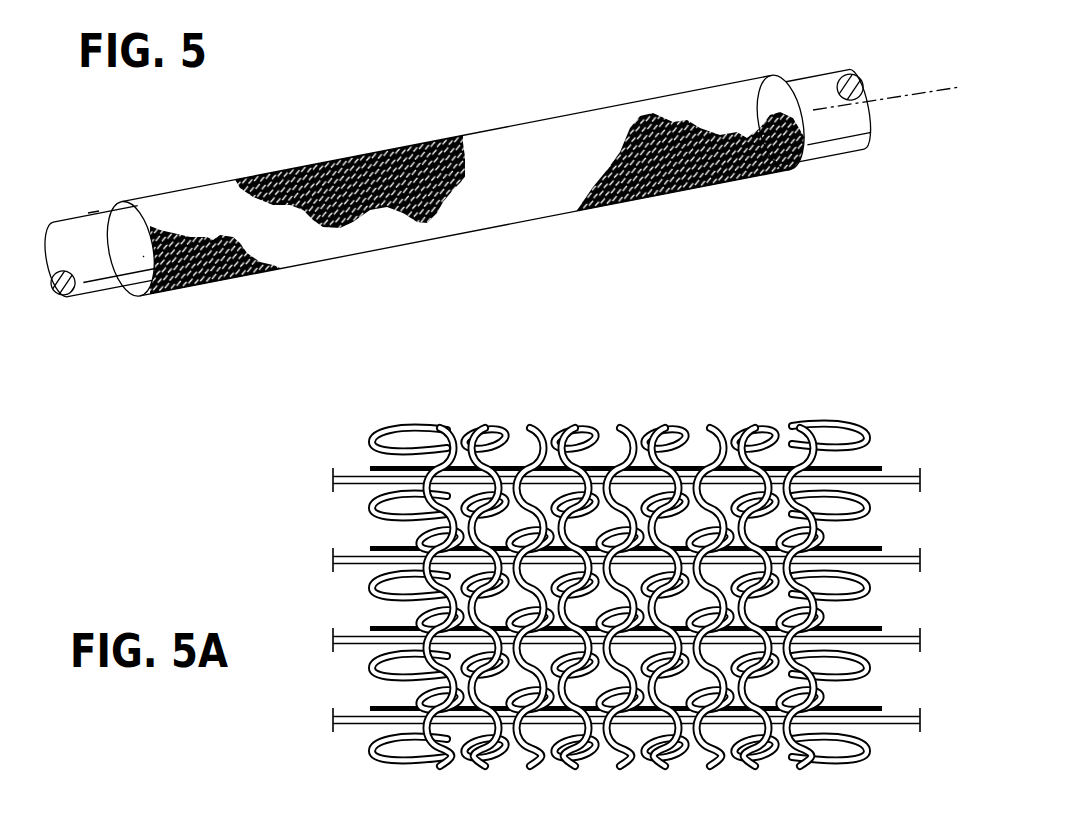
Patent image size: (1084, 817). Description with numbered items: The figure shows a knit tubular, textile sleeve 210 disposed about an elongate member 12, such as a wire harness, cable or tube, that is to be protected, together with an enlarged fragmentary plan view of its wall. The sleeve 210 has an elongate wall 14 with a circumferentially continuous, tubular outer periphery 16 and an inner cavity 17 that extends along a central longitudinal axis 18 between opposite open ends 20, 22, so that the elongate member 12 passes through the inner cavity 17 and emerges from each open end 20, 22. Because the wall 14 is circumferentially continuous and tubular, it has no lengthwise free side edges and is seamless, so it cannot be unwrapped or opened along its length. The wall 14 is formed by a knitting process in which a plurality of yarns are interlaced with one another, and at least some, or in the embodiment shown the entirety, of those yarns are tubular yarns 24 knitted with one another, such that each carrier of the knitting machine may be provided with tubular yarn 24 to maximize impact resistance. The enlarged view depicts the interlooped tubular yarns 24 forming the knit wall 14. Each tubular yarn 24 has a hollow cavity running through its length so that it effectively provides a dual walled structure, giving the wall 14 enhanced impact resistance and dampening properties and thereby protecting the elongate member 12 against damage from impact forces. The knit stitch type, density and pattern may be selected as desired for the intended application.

In FIG. 5, the tubular textile sleeve 210 is at (390, 78).
In FIG. 5A, the tubular textile sleeve 210 is at (798, 395).
In FIG. 5, the elongate member 12 is at (88, 213).
In FIG. 5, the elongate wall 14 is at (510, 165).
In FIG. 5A, the elongate wall 14 is at (348, 428).
In FIG. 5, the tubular outer periphery 16 is at (575, 143).
In FIG. 5, the inner cavity 17 is at (143, 257).
In FIG. 5, the central longitudinal axis 18 is at (923, 90).
In FIG. 5, the open end 20 is at (140, 216).
In FIG. 5, the open end 22 is at (800, 100).
In FIG. 5A, the tubular yarn 24 is at (372, 516).